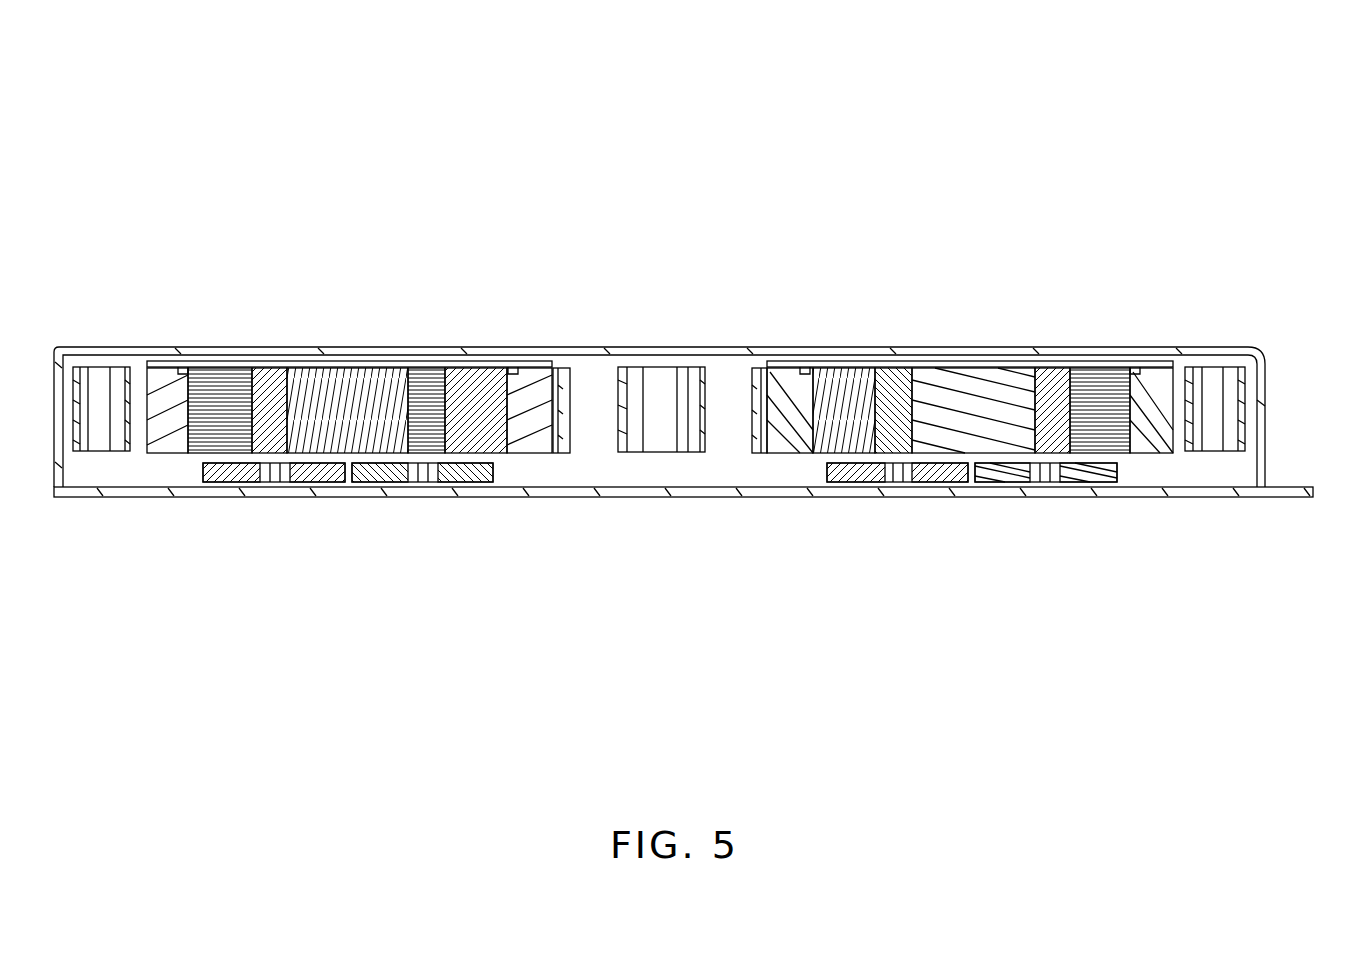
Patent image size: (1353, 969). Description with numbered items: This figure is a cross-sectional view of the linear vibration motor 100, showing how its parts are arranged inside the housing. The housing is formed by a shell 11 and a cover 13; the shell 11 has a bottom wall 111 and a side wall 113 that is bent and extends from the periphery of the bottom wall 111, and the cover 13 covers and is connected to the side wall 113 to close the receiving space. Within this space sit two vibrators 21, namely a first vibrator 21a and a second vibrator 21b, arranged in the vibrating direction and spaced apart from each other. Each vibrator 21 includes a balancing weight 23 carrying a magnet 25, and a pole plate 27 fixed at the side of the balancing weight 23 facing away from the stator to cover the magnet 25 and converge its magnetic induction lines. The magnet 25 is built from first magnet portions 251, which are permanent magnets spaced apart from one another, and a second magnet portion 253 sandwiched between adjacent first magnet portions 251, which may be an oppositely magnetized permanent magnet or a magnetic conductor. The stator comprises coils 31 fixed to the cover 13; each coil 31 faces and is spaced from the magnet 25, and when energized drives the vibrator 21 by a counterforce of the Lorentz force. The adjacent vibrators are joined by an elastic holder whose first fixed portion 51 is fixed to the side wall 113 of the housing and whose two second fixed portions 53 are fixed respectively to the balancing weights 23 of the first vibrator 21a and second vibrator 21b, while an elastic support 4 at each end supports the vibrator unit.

The linear vibration motor 100 is at (665, 66).
The shell 11 is at (1315, 227).
The bottom wall 111 is at (1183, 355).
The side wall 113 is at (1262, 395).
The cover 13 is at (1132, 490).
The elastic support 4 is at (100, 448).
The first fixed portion 51 is at (662, 385).
The second fixed portion 53 is at (558, 448).
The vibrator 21 is at (660, 364).
The first vibrator 21a is at (1005, 212).
The second vibrator 21b is at (331, 396).
The balancing weight 23 is at (782, 378).
The pole plate 27 is at (867, 372).
The magnet 25 is at (1078, 257).
The first magnet portion 251 is at (943, 372).
The second magnet portion 253 is at (1048, 372).
The coil 31 is at (312, 477).